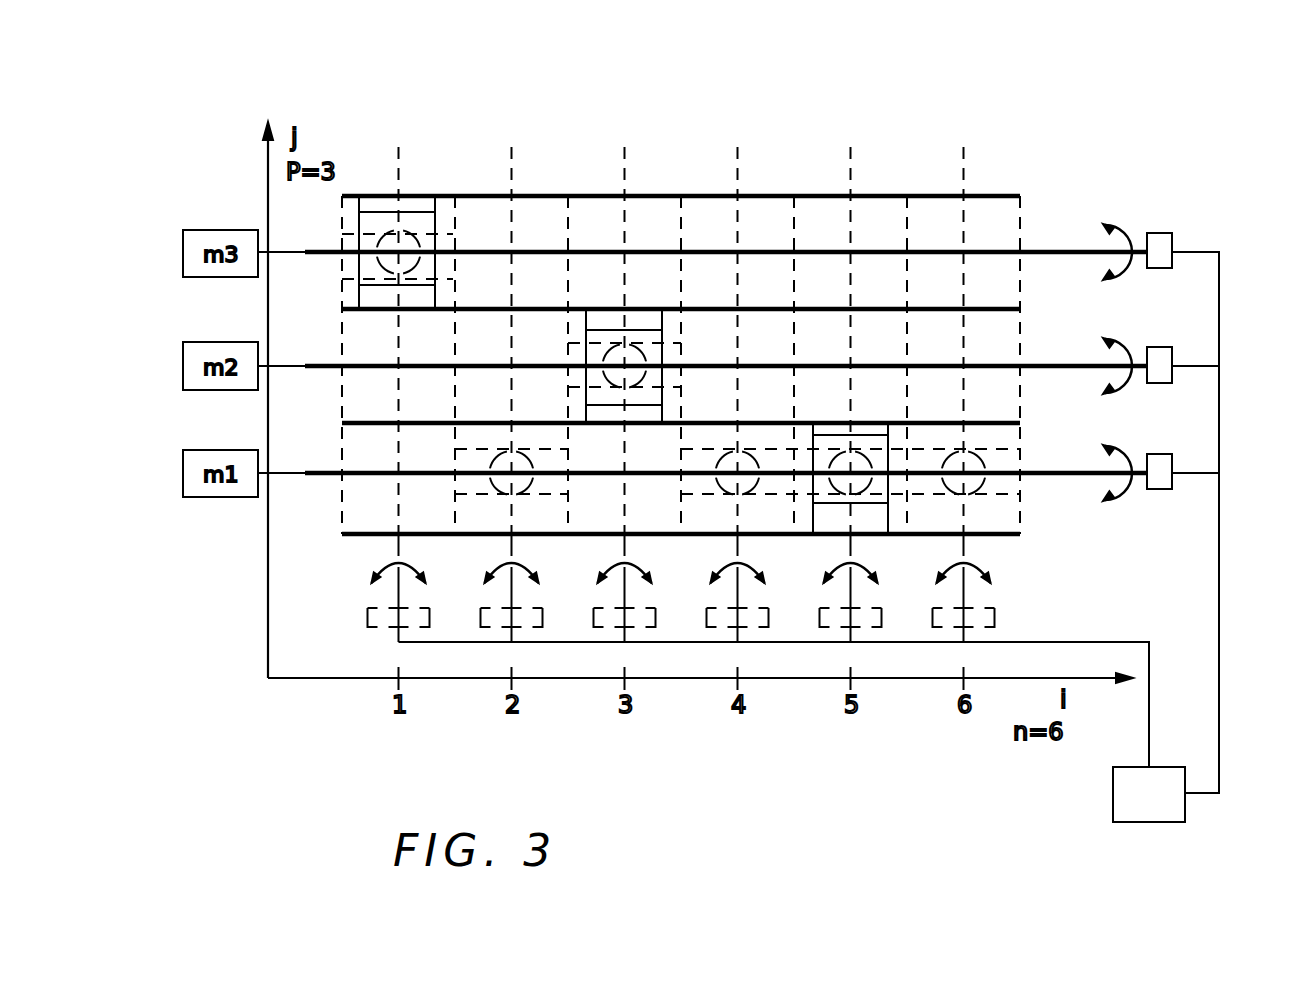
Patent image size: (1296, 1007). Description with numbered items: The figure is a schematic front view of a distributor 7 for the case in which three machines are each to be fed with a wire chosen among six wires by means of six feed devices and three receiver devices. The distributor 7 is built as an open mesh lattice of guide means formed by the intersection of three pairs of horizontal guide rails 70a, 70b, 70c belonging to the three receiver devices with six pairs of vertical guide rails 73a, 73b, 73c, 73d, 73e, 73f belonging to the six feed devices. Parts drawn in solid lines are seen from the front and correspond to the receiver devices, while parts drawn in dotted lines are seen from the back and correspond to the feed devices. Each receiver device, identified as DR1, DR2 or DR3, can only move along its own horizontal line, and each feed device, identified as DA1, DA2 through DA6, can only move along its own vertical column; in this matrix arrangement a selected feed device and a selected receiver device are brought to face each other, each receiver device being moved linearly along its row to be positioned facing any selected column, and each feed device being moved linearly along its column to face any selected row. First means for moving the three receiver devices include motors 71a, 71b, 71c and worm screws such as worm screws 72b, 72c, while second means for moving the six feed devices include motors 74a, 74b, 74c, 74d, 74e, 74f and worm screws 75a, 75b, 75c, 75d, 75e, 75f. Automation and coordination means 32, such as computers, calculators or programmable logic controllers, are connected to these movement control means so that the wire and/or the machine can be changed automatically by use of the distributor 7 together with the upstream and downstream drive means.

The distributor 7 is at (1003, 196).
The horizontal guide rail pair 70a is at (370, 533).
The horizontal guide rail pair 70b is at (363, 421).
The horizontal guide rail pair 70c is at (1018, 200).
The motor 71a is at (1160, 455).
The motor 71b is at (1160, 348).
The motor 71c is at (1157, 246).
The worm screw 72b is at (1078, 350).
The worm screw 72c is at (1075, 255).
The vertical guide rail pair 73a is at (399, 318).
The vertical guide rail pair 73b is at (512, 318).
The vertical guide rail pair 73c is at (625, 318).
The vertical guide rail pair 73d is at (738, 318).
The vertical guide rail pair 73e is at (851, 318).
The vertical guide rail pair 73f is at (1004, 318).
The motor 74a is at (367, 672).
The motor 74b is at (491, 685).
The motor 74c is at (609, 687).
The motor 74d is at (727, 683).
The motor 74e is at (840, 685).
The motor 74f is at (936, 687).
The worm screw 75a is at (365, 588).
The worm screw 75b is at (489, 588).
The worm screw 75c is at (601, 588).
The worm screw 75d is at (714, 588).
The worm screw 75e is at (827, 588).
The worm screw 75f is at (939, 588).
The automation and coordination means 32 is at (1158, 802).
The receiver device DR1 is at (823, 498).
The receiver device DR2 is at (662, 331).
The receiver device DR3 is at (388, 203).
The feed device DA1 is at (468, 247).
The feed device DA2 is at (469, 437).
The feed device DA6 is at (1006, 524).